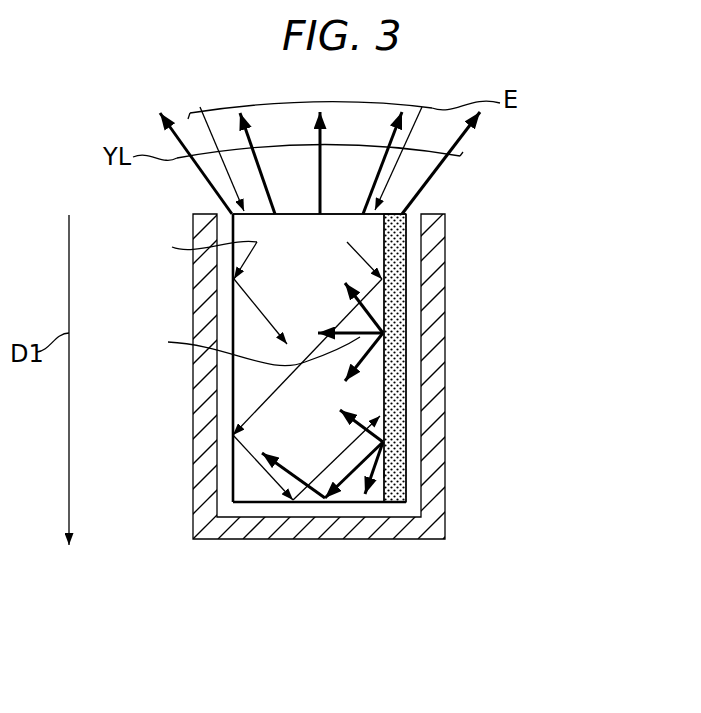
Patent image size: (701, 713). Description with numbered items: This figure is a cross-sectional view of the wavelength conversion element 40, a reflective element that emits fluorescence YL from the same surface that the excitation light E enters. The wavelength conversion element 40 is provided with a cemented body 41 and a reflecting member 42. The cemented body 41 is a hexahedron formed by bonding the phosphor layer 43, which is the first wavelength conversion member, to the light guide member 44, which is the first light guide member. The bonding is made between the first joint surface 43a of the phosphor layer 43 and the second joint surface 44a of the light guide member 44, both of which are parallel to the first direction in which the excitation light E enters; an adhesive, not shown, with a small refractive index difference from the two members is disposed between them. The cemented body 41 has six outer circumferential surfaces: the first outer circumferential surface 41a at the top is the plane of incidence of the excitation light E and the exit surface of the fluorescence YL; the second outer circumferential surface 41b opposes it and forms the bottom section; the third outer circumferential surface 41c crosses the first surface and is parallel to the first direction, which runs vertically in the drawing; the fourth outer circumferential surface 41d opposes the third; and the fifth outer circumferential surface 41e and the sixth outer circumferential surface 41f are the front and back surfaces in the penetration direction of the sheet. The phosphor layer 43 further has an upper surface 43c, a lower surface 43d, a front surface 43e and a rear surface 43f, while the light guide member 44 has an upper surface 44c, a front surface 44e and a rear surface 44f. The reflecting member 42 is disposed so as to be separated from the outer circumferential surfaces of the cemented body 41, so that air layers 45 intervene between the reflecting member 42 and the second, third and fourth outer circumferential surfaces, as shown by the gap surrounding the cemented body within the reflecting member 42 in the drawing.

The wavelength conversion element 40 is at (528, 148).
The cemented body 41 is at (361, 397).
The first outer circumferential surface 41a is at (248, 213).
The second outer circumferential surface 41b is at (273, 503).
The third outer circumferential surface 41c is at (408, 417).
The fourth outer circumferential surface 41d is at (232, 382).
The fifth outer circumferential surface 41e is at (384, 474).
The sixth outer circumferential surface 41f is at (367, 234).
The reflecting member 42 is at (438, 278).
The phosphor layer 43 is at (495, 388).
The first joint surface 43a is at (383, 378).
The upper surface 43c is at (400, 213).
The lower surface 43d is at (400, 503).
The front surface 43e is at (400, 449).
The rear surface 43f is at (398, 297).
The light guide member 44 is at (322, 393).
The second joint surface 44a is at (388, 360).
The upper surface 44c is at (354, 213).
The front surface 44e is at (241, 465).
The rear surface 44f is at (248, 490).
The air layer 45 is at (223, 494).